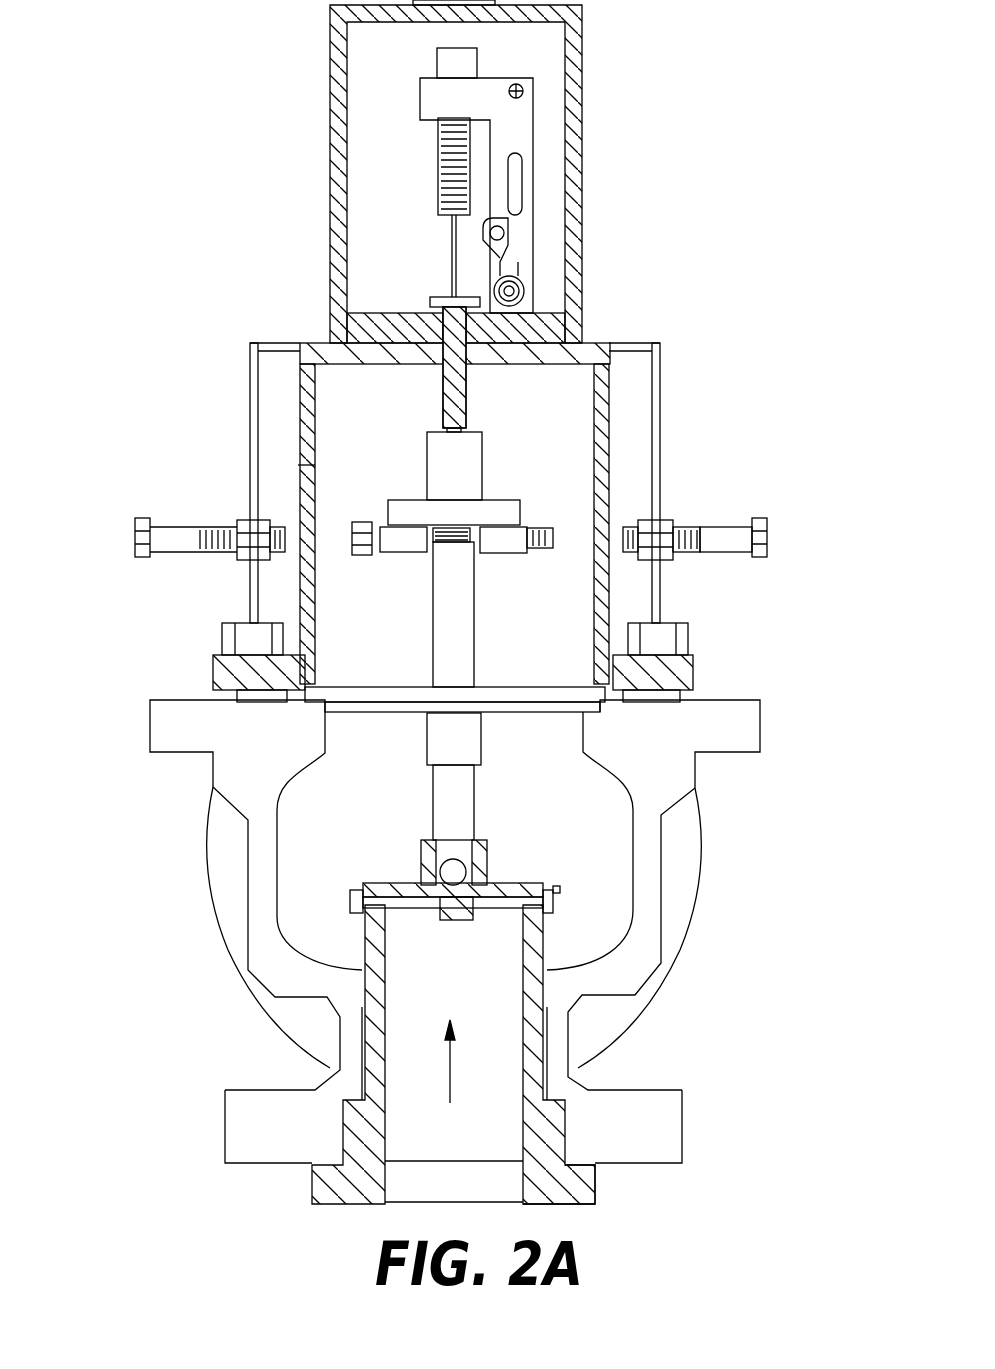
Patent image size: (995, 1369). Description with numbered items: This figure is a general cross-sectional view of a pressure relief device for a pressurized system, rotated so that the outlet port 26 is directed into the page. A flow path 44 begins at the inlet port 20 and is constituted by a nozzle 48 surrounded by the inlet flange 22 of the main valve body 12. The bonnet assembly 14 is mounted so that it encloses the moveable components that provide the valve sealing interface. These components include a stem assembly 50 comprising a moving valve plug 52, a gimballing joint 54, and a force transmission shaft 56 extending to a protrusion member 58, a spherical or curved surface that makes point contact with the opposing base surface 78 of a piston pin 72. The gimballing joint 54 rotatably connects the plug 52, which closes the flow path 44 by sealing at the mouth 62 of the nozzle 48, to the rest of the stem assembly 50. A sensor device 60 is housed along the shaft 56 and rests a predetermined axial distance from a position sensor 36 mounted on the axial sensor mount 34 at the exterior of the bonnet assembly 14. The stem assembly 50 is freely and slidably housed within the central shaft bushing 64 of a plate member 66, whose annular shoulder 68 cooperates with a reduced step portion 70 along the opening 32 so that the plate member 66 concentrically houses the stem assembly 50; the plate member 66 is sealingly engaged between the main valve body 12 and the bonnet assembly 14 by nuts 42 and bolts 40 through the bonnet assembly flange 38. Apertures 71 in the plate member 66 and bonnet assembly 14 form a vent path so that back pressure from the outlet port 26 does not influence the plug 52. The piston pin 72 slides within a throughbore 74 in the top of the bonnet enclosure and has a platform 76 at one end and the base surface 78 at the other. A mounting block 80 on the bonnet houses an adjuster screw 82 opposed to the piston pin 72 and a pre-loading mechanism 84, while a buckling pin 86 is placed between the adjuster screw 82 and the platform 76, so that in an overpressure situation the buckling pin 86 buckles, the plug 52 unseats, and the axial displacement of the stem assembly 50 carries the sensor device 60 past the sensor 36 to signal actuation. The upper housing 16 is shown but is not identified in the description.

The main valve body 12 is at (258, 833).
The bonnet assembly 14 is at (579, 341).
The actuator upper housing 16 is at (332, 105).
The inlet port 20 is at (403, 1198).
The inlet flange 22 is at (247, 1102).
The outlet port 26 is at (607, 845).
The opening 32 is at (325, 735).
The axial sensor mount 34 is at (657, 457).
The position sensor 36 is at (717, 529).
The bonnet assembly flange 38 is at (683, 665).
The bolts 40 is at (667, 693).
The nuts 42 is at (675, 633).
The flow path 44 is at (452, 1067).
The nozzle 48 is at (587, 1187).
The stem assembly 50 is at (517, 430).
The valve plug 52 is at (400, 912).
The gimballing joint 54 is at (420, 860).
The force transmission shaft 56 is at (434, 798).
The protrusion member 58 is at (462, 428).
The sensor device 60 is at (400, 552).
The mouth 62 is at (540, 918).
The shaft bushing 64 is at (427, 727).
The plate member 66 is at (370, 693).
The annular shoulder 68 is at (337, 718).
The reduced step portion 70 is at (323, 698).
The apertures 71 is at (298, 462).
The piston pin 72 is at (445, 375).
The throughbore 74 is at (430, 337).
The platform 76 is at (430, 297).
The base surface 78 is at (446, 428).
The mounting block 80 is at (517, 140).
The adjuster screw 82 is at (437, 165).
The pre-loading mechanism 84 is at (517, 242).
The buckling pin 86 is at (452, 258).